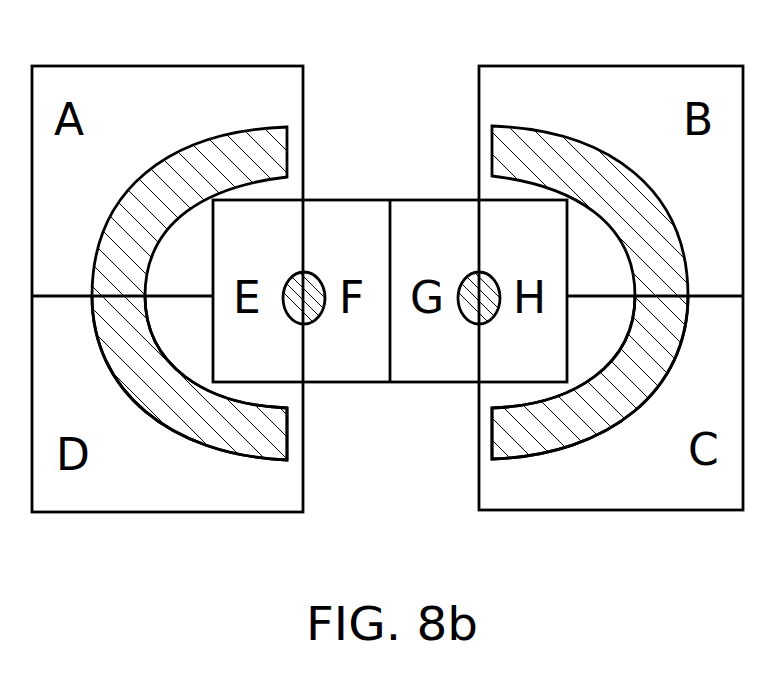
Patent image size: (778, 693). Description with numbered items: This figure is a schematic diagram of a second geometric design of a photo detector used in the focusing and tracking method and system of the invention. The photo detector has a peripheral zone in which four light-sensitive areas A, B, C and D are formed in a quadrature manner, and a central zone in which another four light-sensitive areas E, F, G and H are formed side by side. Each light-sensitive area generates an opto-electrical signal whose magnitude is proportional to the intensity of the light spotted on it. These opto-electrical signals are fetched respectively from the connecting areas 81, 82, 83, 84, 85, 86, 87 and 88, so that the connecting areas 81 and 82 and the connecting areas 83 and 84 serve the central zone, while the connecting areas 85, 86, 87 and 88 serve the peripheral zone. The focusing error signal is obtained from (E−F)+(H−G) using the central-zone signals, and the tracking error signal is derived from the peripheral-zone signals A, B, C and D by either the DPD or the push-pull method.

The connecting area 81 is at (296, 275).
The connecting area 82 is at (315, 318).
The connecting area 83 is at (487, 278).
The connecting area 84 is at (470, 320).
The connecting area 85 is at (213, 165).
The connecting area 86 is at (555, 167).
The connecting area 87 is at (608, 400).
The connecting area 88 is at (193, 413).